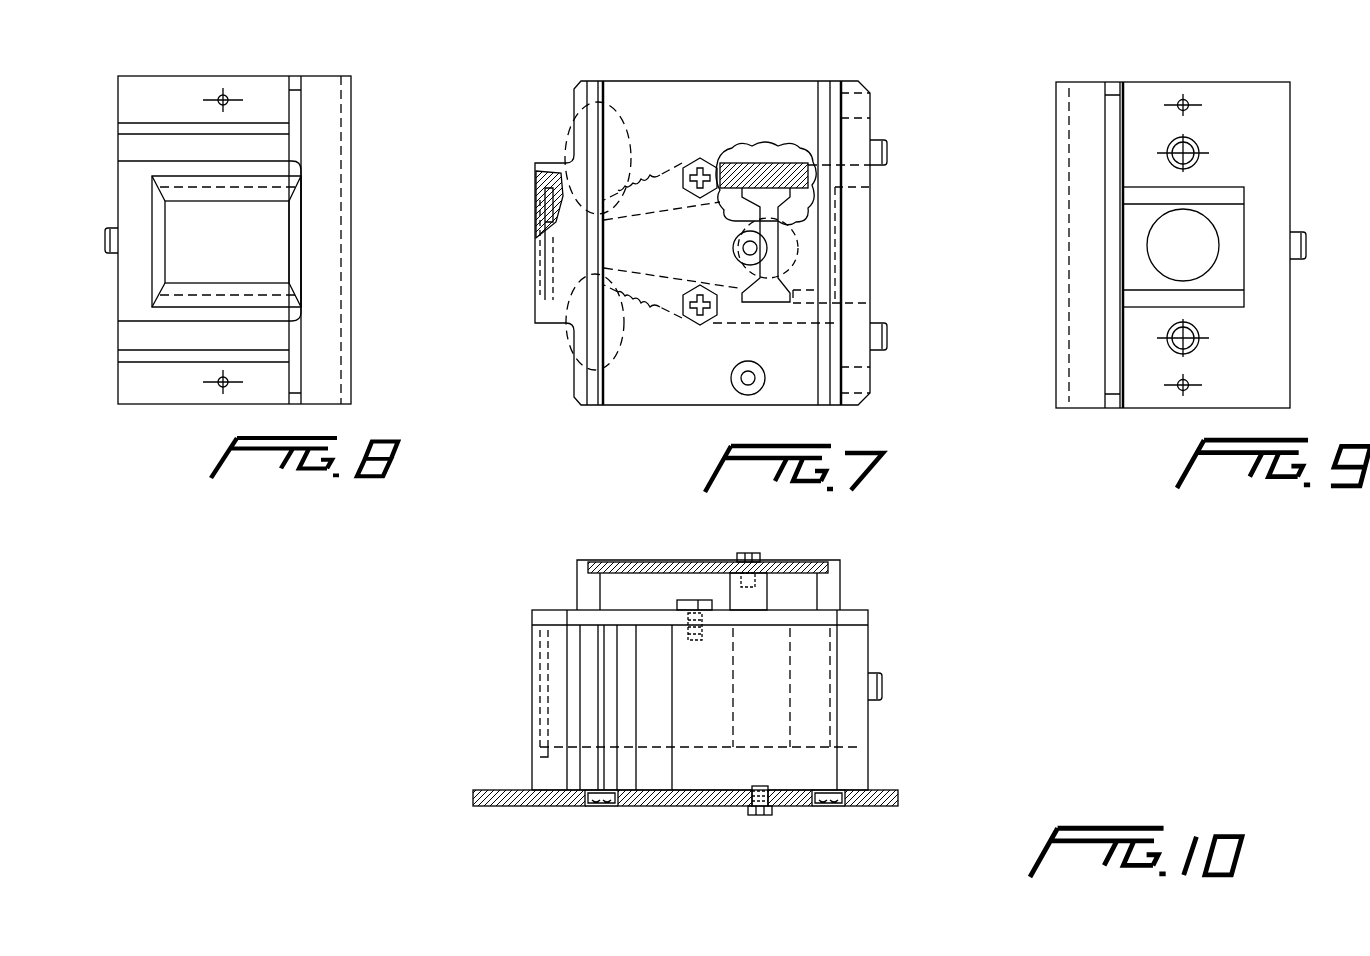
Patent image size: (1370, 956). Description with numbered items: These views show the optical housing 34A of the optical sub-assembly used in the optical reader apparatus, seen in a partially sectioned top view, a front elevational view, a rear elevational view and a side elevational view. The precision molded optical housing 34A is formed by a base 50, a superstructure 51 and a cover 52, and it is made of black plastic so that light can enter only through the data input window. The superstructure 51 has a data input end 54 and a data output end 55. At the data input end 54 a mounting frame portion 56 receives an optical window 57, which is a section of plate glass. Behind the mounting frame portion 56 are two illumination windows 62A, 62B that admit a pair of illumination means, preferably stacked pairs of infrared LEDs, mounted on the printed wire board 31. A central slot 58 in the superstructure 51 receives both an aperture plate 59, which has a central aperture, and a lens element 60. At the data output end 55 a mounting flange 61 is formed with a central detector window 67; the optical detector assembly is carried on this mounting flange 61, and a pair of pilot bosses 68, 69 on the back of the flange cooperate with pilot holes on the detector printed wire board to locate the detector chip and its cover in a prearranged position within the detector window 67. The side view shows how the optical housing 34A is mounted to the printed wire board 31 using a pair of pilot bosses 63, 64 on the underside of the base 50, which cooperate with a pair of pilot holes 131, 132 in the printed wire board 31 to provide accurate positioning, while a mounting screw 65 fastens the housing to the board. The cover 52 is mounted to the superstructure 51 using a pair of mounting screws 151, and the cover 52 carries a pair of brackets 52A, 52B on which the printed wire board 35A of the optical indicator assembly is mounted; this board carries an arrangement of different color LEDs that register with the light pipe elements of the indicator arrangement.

In FIG. 10, the printed wire board 31 is at (482, 788).
In FIG. 8, the optical housing 34A is at (163, 76).
In FIG. 7, the optical housing 34A is at (782, 78).
In FIG. 9, the optical housing 34A is at (1257, 80).
In FIG. 10, the optical housing 34A is at (875, 665).
In FIG. 10, the printed wire board of optical indicator assembly 35A is at (803, 562).
In FIG. 8, the base 50 is at (133, 269).
In FIG. 8, the superstructure 51 is at (193, 311).
In FIG. 8, the cover 52 is at (331, 104).
In FIG. 7, the cover 52 is at (683, 392).
In FIG. 9, the cover 52 is at (1081, 371).
In FIG. 10, the cover 52 is at (878, 620).
In FIG. 10, the bracket 52A is at (833, 582).
In FIG. 10, the bracket 52B is at (583, 582).
In FIG. 7, the data input end 54 is at (528, 280).
In FIG. 10, the data input end 54 is at (525, 663).
In FIG. 7, the data output end 55 is at (857, 222).
In FIG. 10, the data output end 55 is at (872, 728).
In FIG. 7, the mounting frame portion 56 is at (557, 173).
In FIG. 8, the optical window 57 is at (272, 256).
In FIG. 7, the optical window 57 is at (547, 210).
In FIG. 7, the central slot 58 is at (795, 165).
In FIG. 7, the aperture plate 59 is at (718, 167).
In FIG. 7, the lens element 60 is at (764, 190).
In FIG. 7, the mounting flange 61 is at (858, 128).
In FIG. 9, the mounting flange 61 is at (1278, 105).
In FIG. 10, the mounting flange 61 is at (866, 771).
In FIG. 7, the illumination window 62A is at (577, 107).
In FIG. 7, the illumination window 62B is at (563, 368).
In FIG. 8, the pilot boss 63 is at (113, 227).
In FIG. 10, the pilot boss 63 is at (593, 808).
In FIG. 9, the pilot boss 64 is at (1295, 231).
In FIG. 10, the pilot boss 64 is at (835, 807).
In FIG. 10, the mounting screw 65 is at (762, 813).
In FIG. 7, the central detector window 67 is at (855, 300).
In FIG. 9, the central detector window 67 is at (1230, 293).
In FIG. 7, the pilot boss 68 is at (883, 350).
In FIG. 9, the pilot boss 68 is at (1165, 346).
In FIG. 7, the pilot boss 69 is at (888, 153).
In FIG. 9, the pilot boss 69 is at (1170, 153).
In FIG. 10, the pilot hole 131 is at (623, 807).
In FIG. 10, the pilot hole 132 is at (800, 810).
In FIG. 7, the mounting screw 151 is at (692, 318).
In FIG. 10, the mounting screw 151 is at (690, 602).